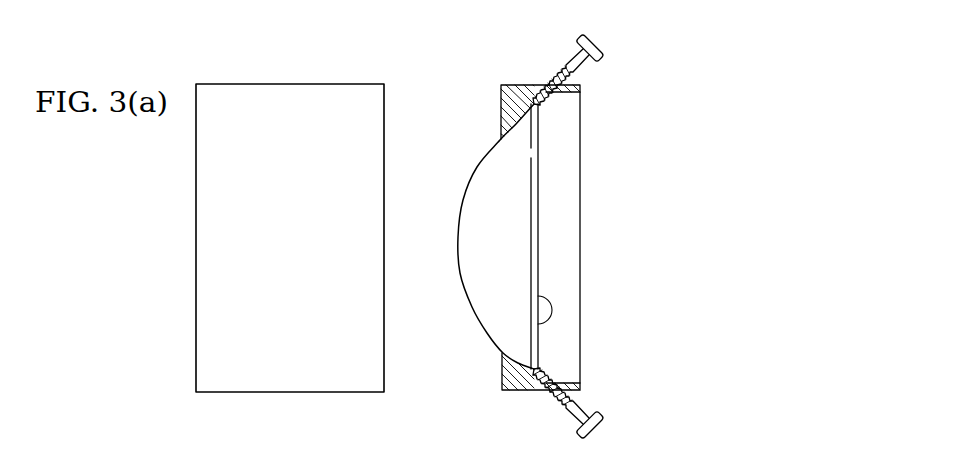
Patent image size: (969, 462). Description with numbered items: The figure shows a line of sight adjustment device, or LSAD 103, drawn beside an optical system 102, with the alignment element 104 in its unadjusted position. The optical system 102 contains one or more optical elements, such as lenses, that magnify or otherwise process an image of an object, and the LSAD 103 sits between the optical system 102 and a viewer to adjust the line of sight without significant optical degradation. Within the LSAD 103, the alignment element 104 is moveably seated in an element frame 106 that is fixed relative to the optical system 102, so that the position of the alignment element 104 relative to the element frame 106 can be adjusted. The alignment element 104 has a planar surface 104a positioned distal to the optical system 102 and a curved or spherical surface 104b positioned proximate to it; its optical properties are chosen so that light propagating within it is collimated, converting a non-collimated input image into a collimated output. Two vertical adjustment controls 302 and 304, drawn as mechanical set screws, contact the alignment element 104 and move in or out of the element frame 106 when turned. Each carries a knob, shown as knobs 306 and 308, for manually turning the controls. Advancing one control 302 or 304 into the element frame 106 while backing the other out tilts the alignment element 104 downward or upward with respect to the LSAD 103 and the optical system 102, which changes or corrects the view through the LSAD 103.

The optical system 102 is at (272, 252).
The LSAD 103 is at (601, 317).
The alignment element 104 is at (477, 237).
The planar surface 104a is at (538, 296).
The curved or spherical surface 104b is at (476, 312).
The element frame 106 is at (500, 98).
The vertical adjustment control 302 is at (553, 80).
The vertical adjustment control 304 is at (560, 394).
The knob 306 is at (604, 62).
The knob 308 is at (598, 431).